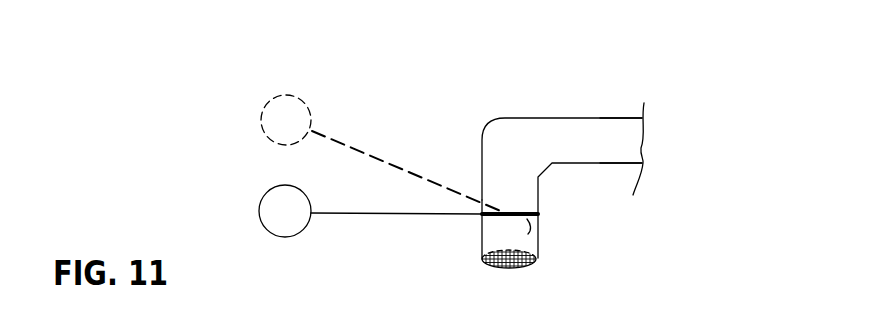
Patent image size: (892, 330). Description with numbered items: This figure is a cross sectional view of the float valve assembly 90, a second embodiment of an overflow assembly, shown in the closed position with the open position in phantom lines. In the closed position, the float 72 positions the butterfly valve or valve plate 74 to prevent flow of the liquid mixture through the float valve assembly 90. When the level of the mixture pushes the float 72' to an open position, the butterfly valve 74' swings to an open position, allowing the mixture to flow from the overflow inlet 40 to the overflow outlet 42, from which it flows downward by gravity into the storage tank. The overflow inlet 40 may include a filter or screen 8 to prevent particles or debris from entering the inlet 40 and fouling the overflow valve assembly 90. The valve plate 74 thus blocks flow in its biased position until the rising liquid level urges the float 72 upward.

The float valve assembly 90 is at (513, 108).
The overflow outlet 42 is at (640, 147).
The overflow inlet 40 is at (488, 240).
The screen 8 is at (520, 268).
The valve plate 74 is at (541, 193).
The butterfly valve in open position 74' is at (590, 226).
The float 72 is at (370, 240).
The float in open position 72' is at (382, 132).